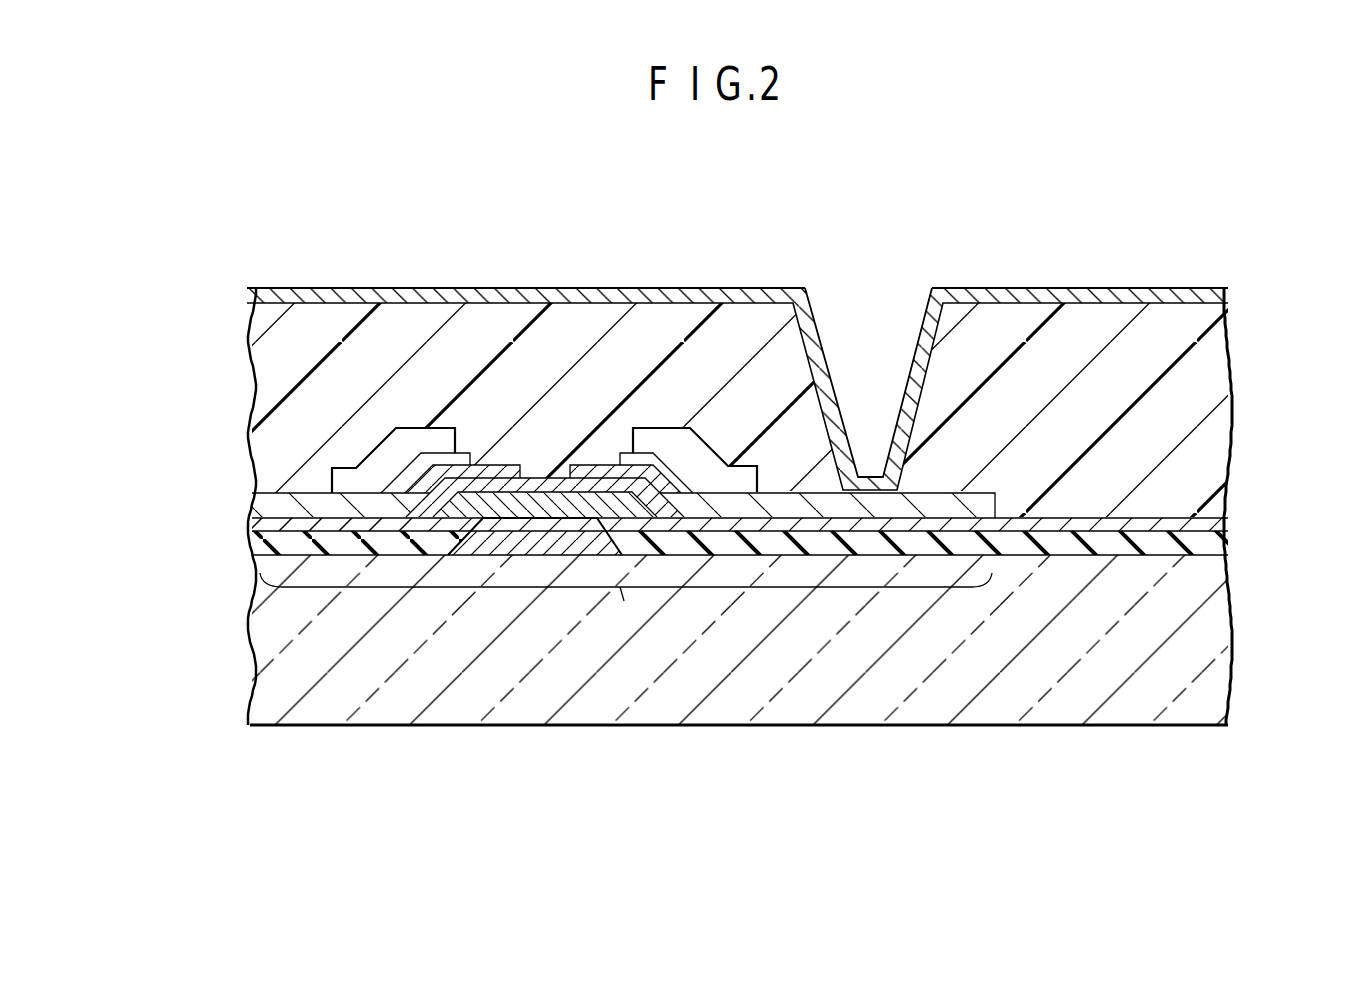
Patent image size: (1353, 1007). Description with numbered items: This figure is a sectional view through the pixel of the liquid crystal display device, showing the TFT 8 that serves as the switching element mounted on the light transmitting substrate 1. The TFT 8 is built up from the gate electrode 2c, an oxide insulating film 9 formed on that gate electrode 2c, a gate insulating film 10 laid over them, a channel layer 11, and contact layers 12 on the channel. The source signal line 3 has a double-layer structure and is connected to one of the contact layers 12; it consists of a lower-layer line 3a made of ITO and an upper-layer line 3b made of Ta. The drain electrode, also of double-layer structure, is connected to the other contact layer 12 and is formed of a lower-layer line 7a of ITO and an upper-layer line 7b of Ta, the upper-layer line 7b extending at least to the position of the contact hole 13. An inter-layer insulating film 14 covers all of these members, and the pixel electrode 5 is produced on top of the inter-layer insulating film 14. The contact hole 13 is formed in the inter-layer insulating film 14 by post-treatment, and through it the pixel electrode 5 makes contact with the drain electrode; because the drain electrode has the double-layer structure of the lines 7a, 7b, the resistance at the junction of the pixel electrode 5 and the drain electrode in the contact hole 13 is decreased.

The light transmitting substrate 1 is at (1213, 620).
The gate electrode 2c is at (528, 533).
The source signal line 3 is at (273, 509).
The lower-layer line 3a is at (262, 526).
The upper-layer line 3b is at (262, 503).
The pixel electrode 5 is at (1105, 295).
The lower-layer line of the drain electrode 7a is at (1230, 514).
The upper-layer line of the drain electrode 7b is at (987, 503).
The TFT 8 is at (626, 601).
The oxide insulating film 9 is at (390, 440).
The gate insulating film 10 is at (1218, 543).
The channel layer 11 is at (365, 452).
The contact layers 12 is at (490, 470).
The contact hole 13 is at (877, 362).
The inter-layer insulating film 14 is at (1215, 357).